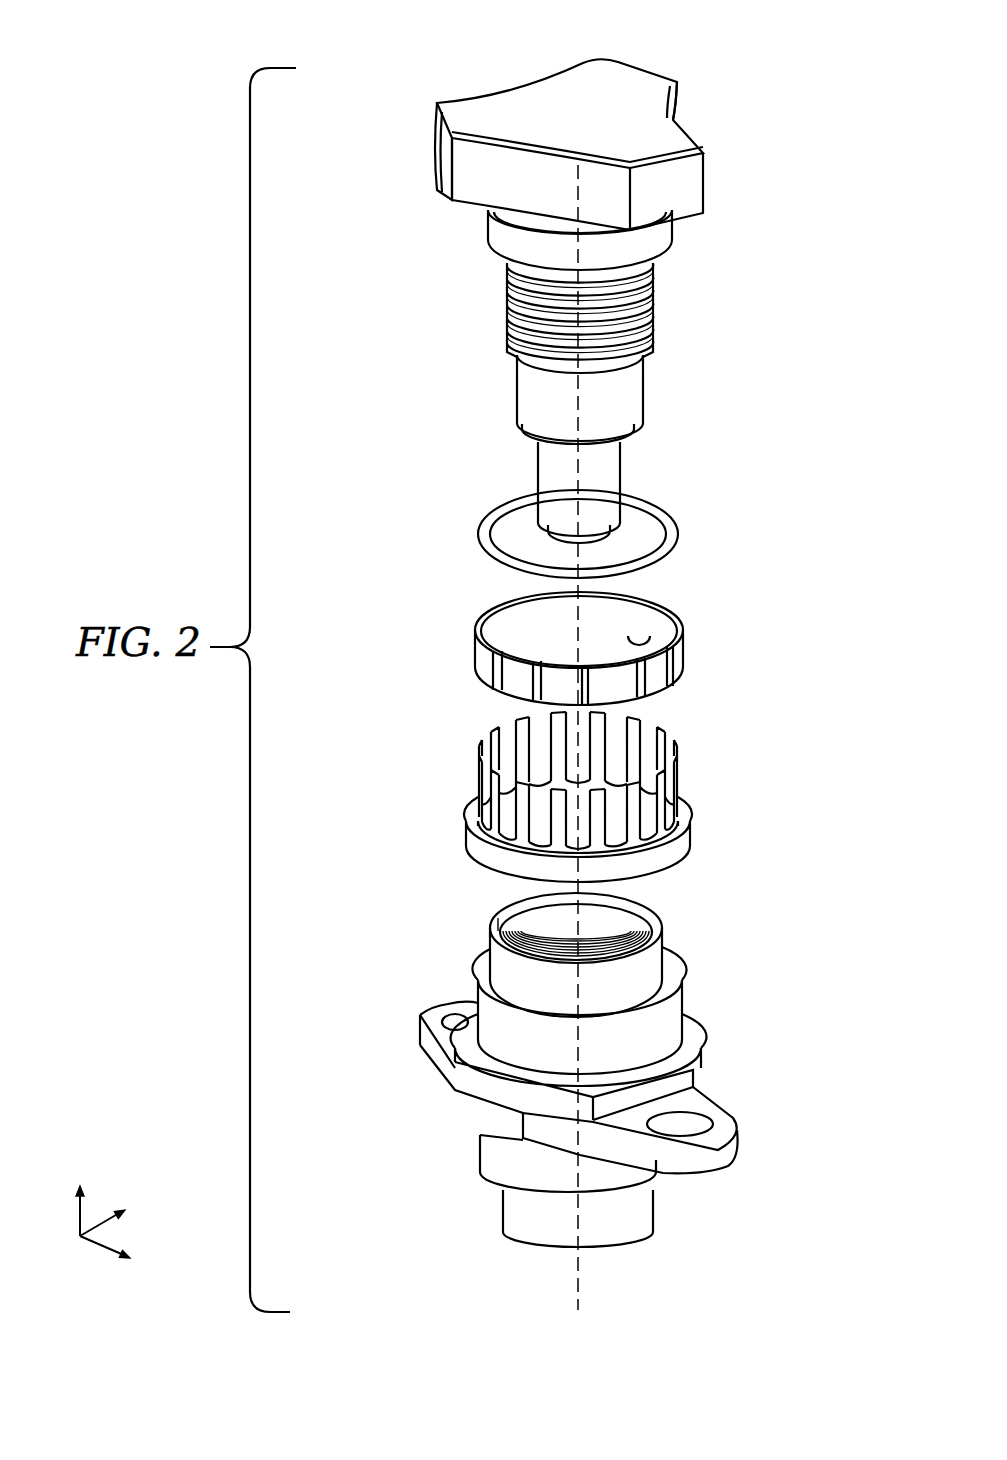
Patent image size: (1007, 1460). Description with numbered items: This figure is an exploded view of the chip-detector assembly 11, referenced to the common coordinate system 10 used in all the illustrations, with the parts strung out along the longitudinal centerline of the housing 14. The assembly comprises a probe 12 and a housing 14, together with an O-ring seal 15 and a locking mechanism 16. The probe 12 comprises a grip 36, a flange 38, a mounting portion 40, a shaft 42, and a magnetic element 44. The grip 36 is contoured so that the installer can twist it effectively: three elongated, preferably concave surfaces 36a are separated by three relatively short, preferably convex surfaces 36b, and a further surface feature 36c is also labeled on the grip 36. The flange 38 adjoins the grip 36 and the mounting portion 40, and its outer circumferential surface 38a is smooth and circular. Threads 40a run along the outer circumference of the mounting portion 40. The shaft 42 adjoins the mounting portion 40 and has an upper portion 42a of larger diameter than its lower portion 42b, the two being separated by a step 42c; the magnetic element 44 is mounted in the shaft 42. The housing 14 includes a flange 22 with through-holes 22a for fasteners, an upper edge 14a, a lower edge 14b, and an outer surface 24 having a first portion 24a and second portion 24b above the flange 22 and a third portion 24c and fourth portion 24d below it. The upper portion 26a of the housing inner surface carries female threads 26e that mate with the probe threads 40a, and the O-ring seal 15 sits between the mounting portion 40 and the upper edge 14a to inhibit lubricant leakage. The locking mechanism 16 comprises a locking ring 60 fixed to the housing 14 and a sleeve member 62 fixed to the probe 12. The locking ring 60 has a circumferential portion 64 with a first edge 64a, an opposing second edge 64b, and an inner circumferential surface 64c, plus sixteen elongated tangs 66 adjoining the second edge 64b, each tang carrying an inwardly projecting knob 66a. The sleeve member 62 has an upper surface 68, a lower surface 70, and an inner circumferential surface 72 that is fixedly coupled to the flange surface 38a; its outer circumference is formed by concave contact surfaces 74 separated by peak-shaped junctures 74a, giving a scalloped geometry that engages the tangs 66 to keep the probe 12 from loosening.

The coordinate system 10 is at (88, 1242).
The chip-detector assembly 11 is at (808, 30).
The probe 12 is at (732, 232).
The housing 14 is at (790, 999).
The upper edge 14a is at (660, 927).
The lower edge 14b is at (525, 1240).
The O-ring seal 15 is at (675, 543).
The locking mechanism 16 is at (780, 751).
The flange 22 is at (733, 1118).
The through-holes 22a is at (453, 1018).
The outer surface 24 is at (714, 994).
The first portion 24a is at (576, 972).
The second portion 24b is at (579, 1033).
The third portion 24c is at (568, 1163).
The fourth portion 24d is at (548, 1229).
The upper portion 26a is at (500, 915).
The threads 26e is at (620, 909).
The grip 36 is at (592, 50).
The elongated surfaces 36a is at (541, 184).
The short surfaces 36b is at (437, 148).
The knob lobe recess 36c is at (680, 97).
The flange 38 is at (468, 232).
The outer circumferential surface 38a is at (580, 240).
The mounting portion 40 is at (477, 311).
The threads 40a is at (657, 300).
The shaft 42 is at (492, 423).
The upper portion 42a is at (580, 398).
The lower portion 42b is at (579, 492).
The step 42c is at (640, 424).
The magnetic element 44 is at (497, 530).
The locking ring 60 is at (733, 791).
The sleeve member 62 is at (696, 645).
The circumferential portion 64 is at (705, 837).
The first edge 64a is at (693, 858).
The second edge 64b is at (545, 856).
The inner circumferential surface 64c is at (575, 852).
The tangs 66 is at (690, 786).
The knob 66a is at (498, 725).
The upper surface 68 is at (650, 605).
The lower surface 70 is at (668, 624).
The inner circumferential surface 72 is at (579, 631).
The contact surfaces 74 is at (543, 676).
The junctures 74a is at (530, 703).